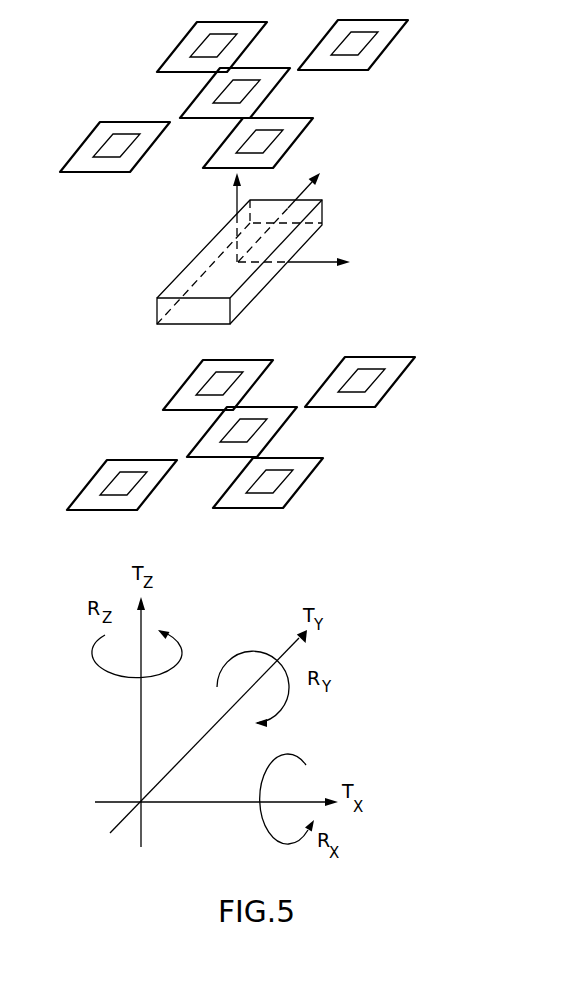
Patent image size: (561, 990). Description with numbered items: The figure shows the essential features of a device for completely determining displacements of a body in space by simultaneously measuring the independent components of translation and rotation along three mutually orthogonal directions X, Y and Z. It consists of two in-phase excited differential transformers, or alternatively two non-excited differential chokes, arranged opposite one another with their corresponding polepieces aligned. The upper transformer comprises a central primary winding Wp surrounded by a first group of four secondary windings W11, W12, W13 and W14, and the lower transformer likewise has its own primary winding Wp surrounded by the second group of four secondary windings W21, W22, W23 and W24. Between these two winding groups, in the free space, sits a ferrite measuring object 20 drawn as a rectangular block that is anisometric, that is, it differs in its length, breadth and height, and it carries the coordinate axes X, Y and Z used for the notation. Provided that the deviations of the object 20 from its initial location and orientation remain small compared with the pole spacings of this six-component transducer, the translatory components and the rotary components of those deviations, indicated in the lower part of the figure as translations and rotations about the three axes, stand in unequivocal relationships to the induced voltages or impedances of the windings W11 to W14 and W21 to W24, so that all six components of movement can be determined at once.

The ferrite measuring object 20 is at (217, 285).
The primary winding Wp is at (253, 262).
The secondary winding W11 is at (147, 17).
The secondary winding W12 is at (451, 18).
The secondary winding W13 is at (363, 114).
The secondary winding W14 is at (63, 114).
The secondary winding W21 is at (159, 350).
The secondary winding W22 is at (453, 357).
The secondary winding W23 is at (370, 449).
The secondary winding W24 is at (71, 451).